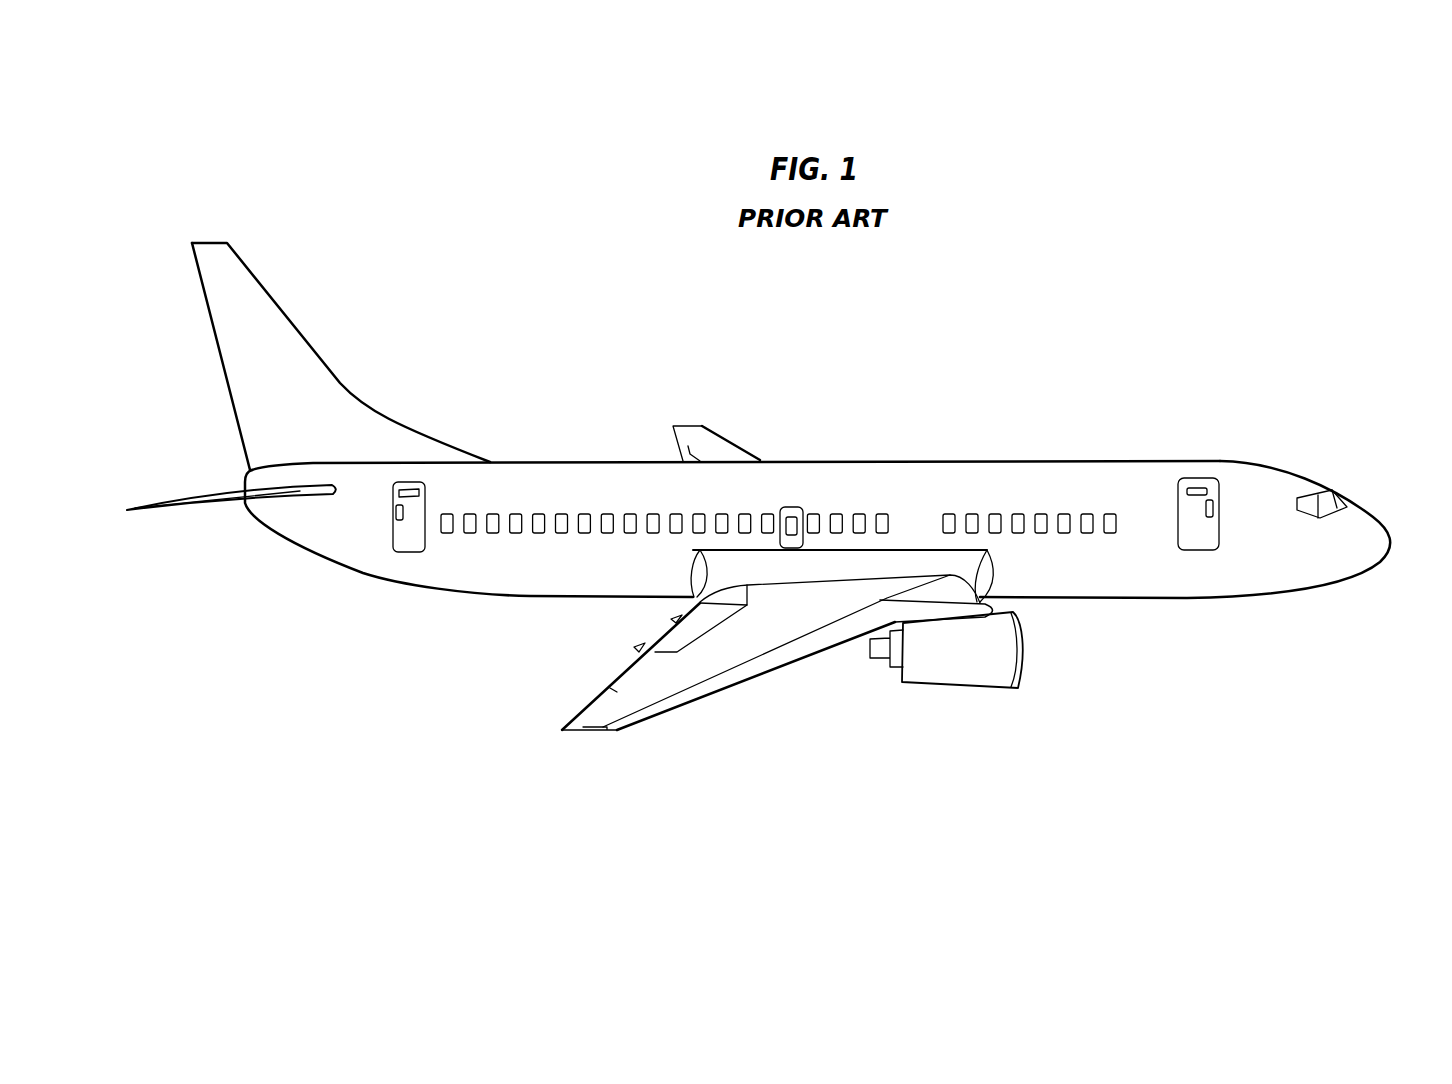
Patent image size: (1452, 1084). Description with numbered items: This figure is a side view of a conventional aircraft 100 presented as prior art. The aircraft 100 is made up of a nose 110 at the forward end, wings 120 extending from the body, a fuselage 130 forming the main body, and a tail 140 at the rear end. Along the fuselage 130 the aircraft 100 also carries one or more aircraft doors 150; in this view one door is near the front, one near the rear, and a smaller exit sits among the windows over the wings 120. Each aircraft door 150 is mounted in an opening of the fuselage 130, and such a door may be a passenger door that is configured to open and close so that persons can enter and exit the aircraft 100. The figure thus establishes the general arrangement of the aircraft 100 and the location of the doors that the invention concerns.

The aircraft 100 is at (1166, 807).
The nose 110 is at (1367, 520).
The wings 120 is at (655, 690).
The fuselage 130 is at (930, 475).
The tail 140 is at (248, 330).
The aircraft door 150 is at (400, 537).